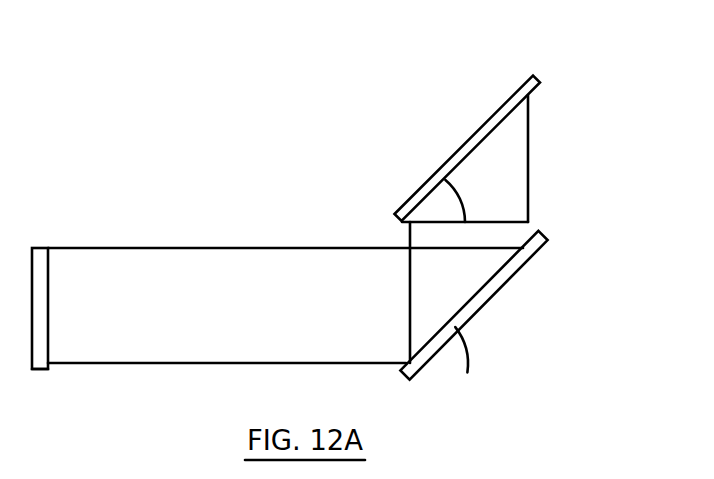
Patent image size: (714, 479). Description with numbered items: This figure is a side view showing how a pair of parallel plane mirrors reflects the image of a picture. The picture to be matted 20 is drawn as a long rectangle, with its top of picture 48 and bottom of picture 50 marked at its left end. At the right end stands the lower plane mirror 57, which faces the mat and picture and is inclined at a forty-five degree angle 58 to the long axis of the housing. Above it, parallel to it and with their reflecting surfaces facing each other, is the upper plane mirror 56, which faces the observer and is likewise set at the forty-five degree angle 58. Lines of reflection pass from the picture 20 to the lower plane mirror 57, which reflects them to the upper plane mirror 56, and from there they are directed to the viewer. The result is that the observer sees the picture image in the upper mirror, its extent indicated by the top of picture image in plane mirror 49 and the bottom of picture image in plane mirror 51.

The picture to be matted 20 is at (283, 283).
The top of picture 48 is at (94, 269).
The top of picture image in plane mirror 49 is at (596, 141).
The bottom of picture 50 is at (85, 392).
The bottom of picture image in plane mirror 51 is at (532, 196).
The upper plane mirror facing observer 56 is at (509, 111).
The lower plane mirror facing mat and picture 57 is at (524, 305).
The 45 degree angle 58 is at (553, 250).